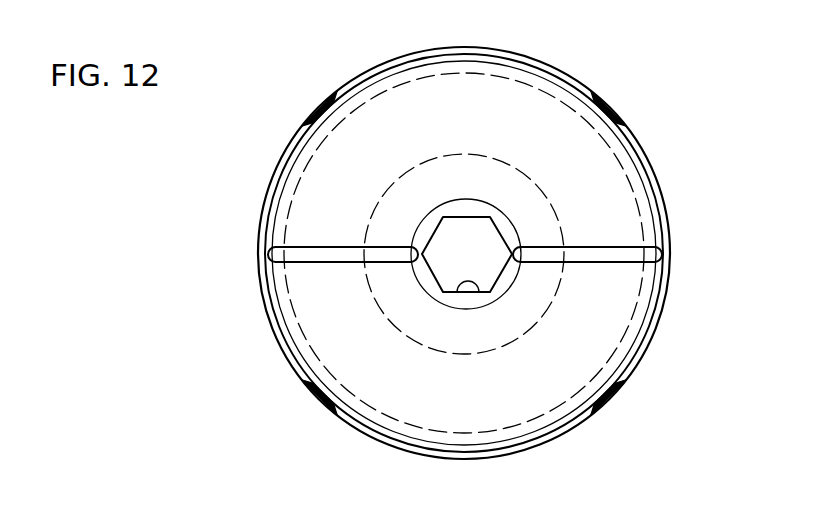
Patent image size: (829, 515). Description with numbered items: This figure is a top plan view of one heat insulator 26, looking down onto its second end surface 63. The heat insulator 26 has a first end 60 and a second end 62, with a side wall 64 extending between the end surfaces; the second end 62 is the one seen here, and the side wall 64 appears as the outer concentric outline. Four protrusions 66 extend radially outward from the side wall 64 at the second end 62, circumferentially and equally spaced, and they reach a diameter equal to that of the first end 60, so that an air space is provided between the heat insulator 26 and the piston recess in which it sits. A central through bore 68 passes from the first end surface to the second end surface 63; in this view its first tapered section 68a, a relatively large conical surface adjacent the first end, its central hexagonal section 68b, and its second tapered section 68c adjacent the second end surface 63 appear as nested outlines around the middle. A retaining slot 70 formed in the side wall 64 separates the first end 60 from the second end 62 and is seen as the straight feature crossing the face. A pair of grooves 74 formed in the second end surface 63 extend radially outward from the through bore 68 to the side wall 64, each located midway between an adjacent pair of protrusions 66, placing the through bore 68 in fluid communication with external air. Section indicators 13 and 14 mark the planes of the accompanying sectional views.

The section line 13- 13 is at (252, 253).
The section line 14- 14 is at (473, 243).
The heat insulator 26 is at (612, 62).
The first end 60 is at (663, 305).
The second end 62 is at (662, 275).
The second end surface 63 is at (458, 123).
The side wall 64 is at (276, 153).
The protrusions 66 is at (320, 102).
The through bore 68 is at (477, 220).
The first tapered section 68a is at (518, 305).
The central hexagonal section 68b is at (481, 284).
The second tapered section 68c is at (427, 277).
The retaining slot 70 is at (290, 294).
The grooves 74 is at (596, 248).